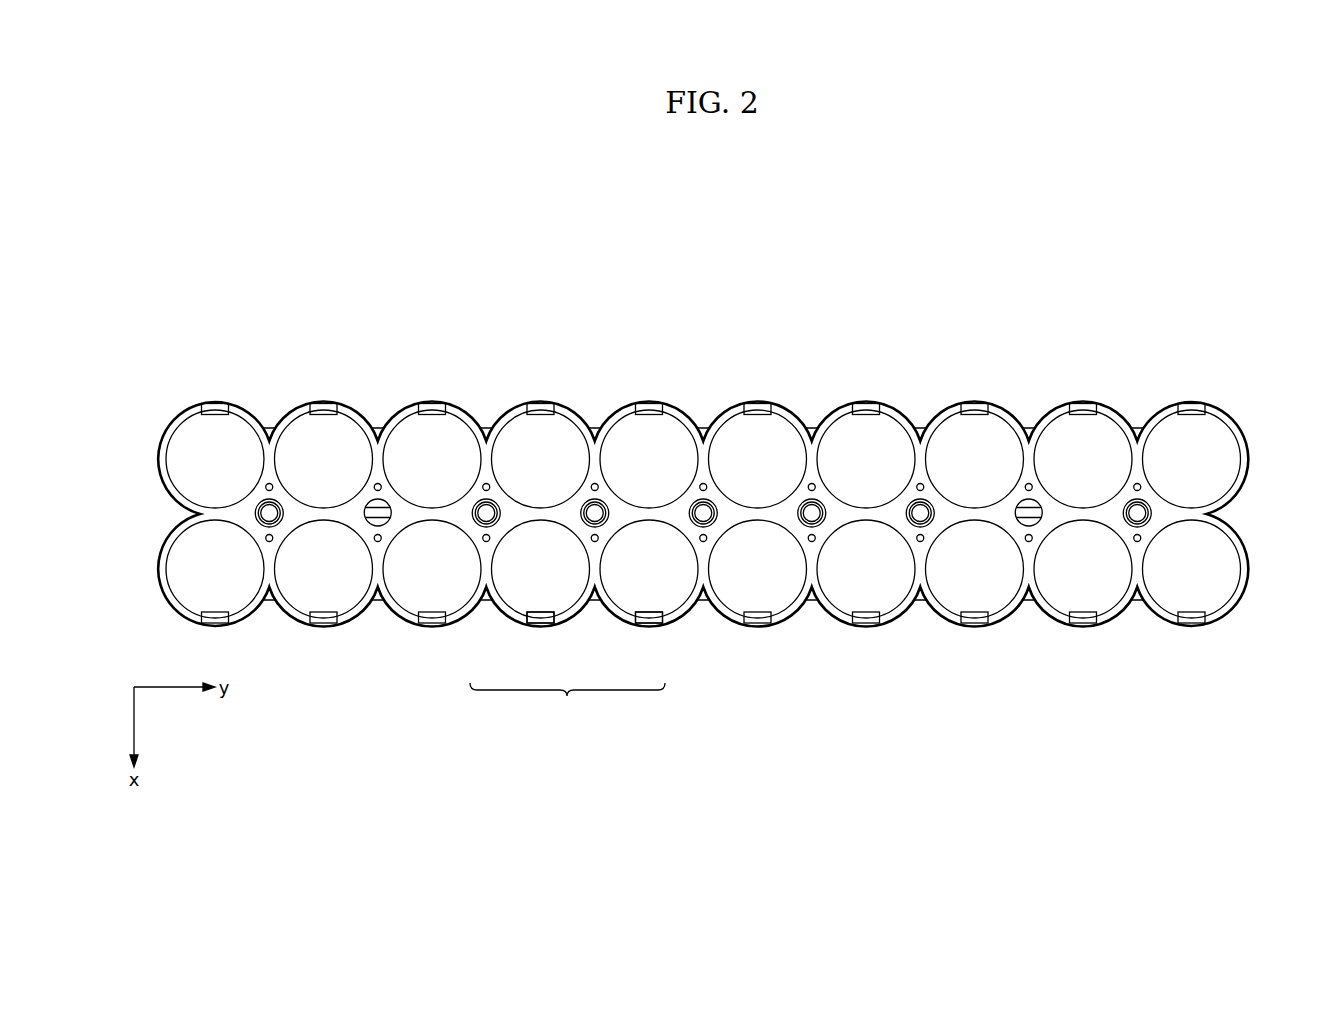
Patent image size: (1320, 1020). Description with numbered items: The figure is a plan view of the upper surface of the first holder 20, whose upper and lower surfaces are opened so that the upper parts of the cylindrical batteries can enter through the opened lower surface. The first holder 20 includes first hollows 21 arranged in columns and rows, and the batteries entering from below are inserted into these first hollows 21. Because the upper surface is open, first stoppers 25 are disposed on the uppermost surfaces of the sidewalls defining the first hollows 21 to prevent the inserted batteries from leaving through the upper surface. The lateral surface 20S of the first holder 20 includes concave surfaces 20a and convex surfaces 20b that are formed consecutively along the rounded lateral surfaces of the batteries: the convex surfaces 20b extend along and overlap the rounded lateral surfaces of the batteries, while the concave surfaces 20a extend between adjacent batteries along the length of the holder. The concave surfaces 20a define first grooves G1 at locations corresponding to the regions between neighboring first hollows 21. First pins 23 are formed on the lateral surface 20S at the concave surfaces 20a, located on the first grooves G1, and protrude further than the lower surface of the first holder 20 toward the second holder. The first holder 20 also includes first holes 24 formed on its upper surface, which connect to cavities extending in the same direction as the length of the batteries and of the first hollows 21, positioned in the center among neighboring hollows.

The first holder 20 is at (1197, 307).
The concave surfaces 20a is at (486, 600).
The convex surfaces 20b is at (541, 623).
The lateral surface 20S is at (567, 702).
The first hollows 21 is at (182, 458).
The first pins 23 is at (269, 428).
The first holes 24 is at (490, 507).
The first stoppers 25 is at (216, 409).
The first grooves G1 is at (703, 428).